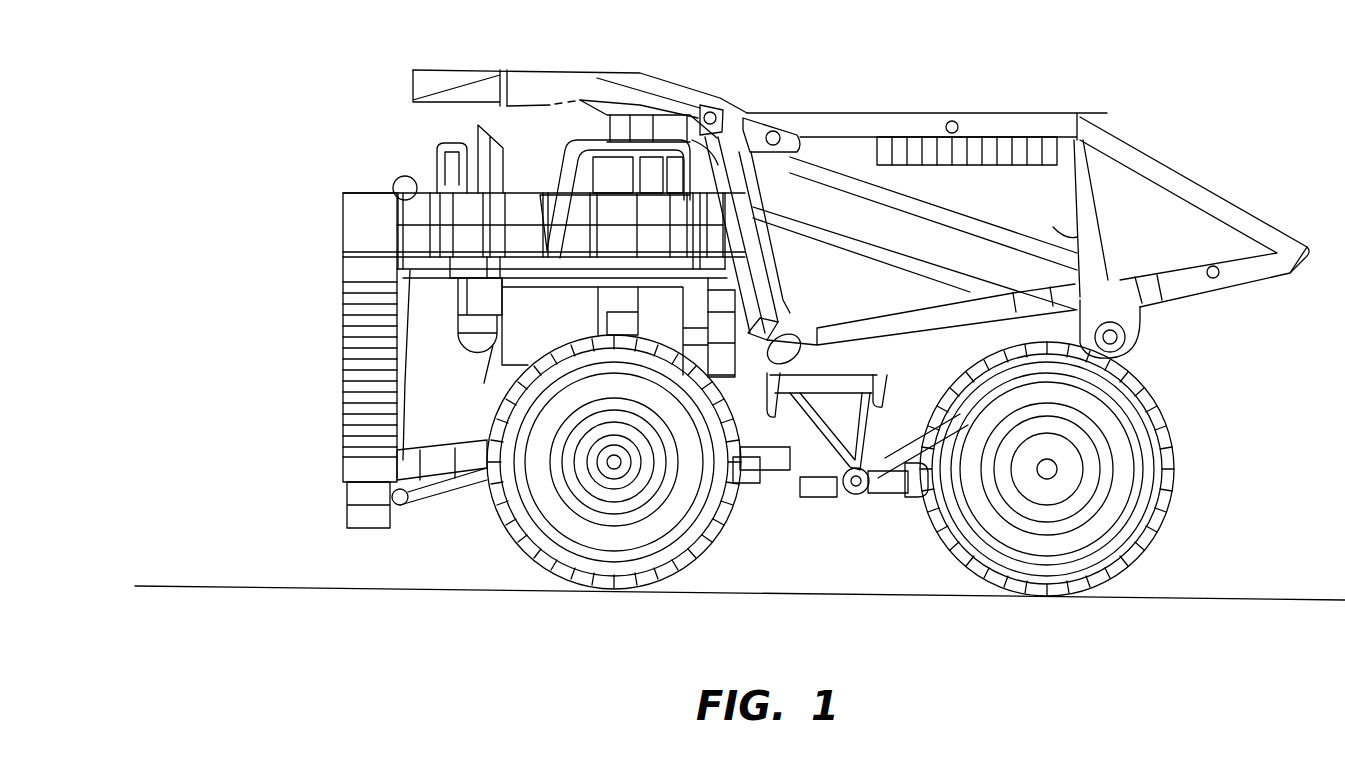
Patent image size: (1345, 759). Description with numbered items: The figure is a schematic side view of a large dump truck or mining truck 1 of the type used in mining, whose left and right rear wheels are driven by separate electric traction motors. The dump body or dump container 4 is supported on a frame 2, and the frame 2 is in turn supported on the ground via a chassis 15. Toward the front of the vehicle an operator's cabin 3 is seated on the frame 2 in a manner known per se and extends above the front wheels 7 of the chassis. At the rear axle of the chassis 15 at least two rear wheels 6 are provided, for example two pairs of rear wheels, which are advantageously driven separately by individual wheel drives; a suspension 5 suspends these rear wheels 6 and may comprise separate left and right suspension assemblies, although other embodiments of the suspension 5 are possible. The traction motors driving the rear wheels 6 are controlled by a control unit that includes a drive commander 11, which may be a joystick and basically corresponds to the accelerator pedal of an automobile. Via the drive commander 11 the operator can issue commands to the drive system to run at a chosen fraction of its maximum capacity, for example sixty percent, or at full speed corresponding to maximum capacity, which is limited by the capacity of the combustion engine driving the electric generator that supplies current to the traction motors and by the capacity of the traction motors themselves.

The dump truck 1 is at (262, 358).
The frame 2 is at (857, 493).
The operator's cabin 3 is at (580, 147).
The dump body 4 is at (1123, 197).
The suspension 5 is at (896, 507).
The rear wheels 6 is at (1130, 575).
The front wheels 7 is at (520, 565).
The drive commander 11 is at (573, 183).
The chassis 15 is at (783, 487).